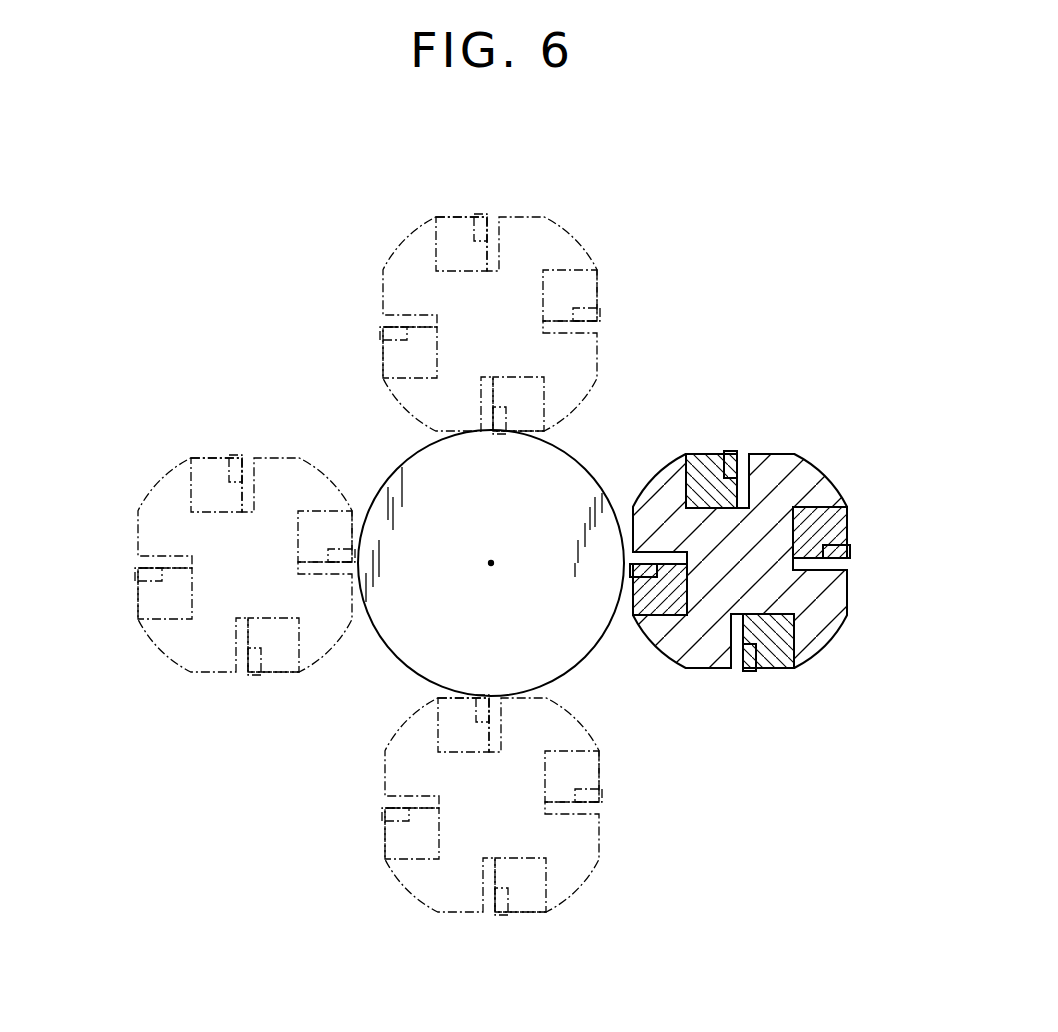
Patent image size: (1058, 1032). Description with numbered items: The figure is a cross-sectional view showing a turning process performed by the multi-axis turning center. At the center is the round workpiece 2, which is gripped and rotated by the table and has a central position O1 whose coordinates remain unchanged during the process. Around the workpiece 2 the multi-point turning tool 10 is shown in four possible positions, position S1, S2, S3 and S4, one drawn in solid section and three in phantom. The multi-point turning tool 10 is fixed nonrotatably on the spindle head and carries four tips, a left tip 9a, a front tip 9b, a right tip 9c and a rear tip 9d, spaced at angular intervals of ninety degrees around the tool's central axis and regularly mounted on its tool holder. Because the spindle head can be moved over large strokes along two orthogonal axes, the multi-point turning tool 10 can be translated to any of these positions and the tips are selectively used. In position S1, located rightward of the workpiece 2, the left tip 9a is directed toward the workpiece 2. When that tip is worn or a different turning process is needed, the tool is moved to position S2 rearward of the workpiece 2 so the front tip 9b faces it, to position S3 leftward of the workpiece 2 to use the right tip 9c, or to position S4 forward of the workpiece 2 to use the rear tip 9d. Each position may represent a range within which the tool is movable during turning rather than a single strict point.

The workpiece 2 is at (572, 455).
The central position O1 is at (491, 563).
The multi-point turning tool 10 is at (560, 222).
The left tip 9a is at (382, 333).
The front tip 9b is at (492, 433).
The right tip 9c is at (604, 315).
The rear tip 9d is at (484, 213).
The position S1 is at (776, 572).
The position S2 is at (513, 295).
The position S3 is at (276, 535).
The position S4 is at (516, 809).